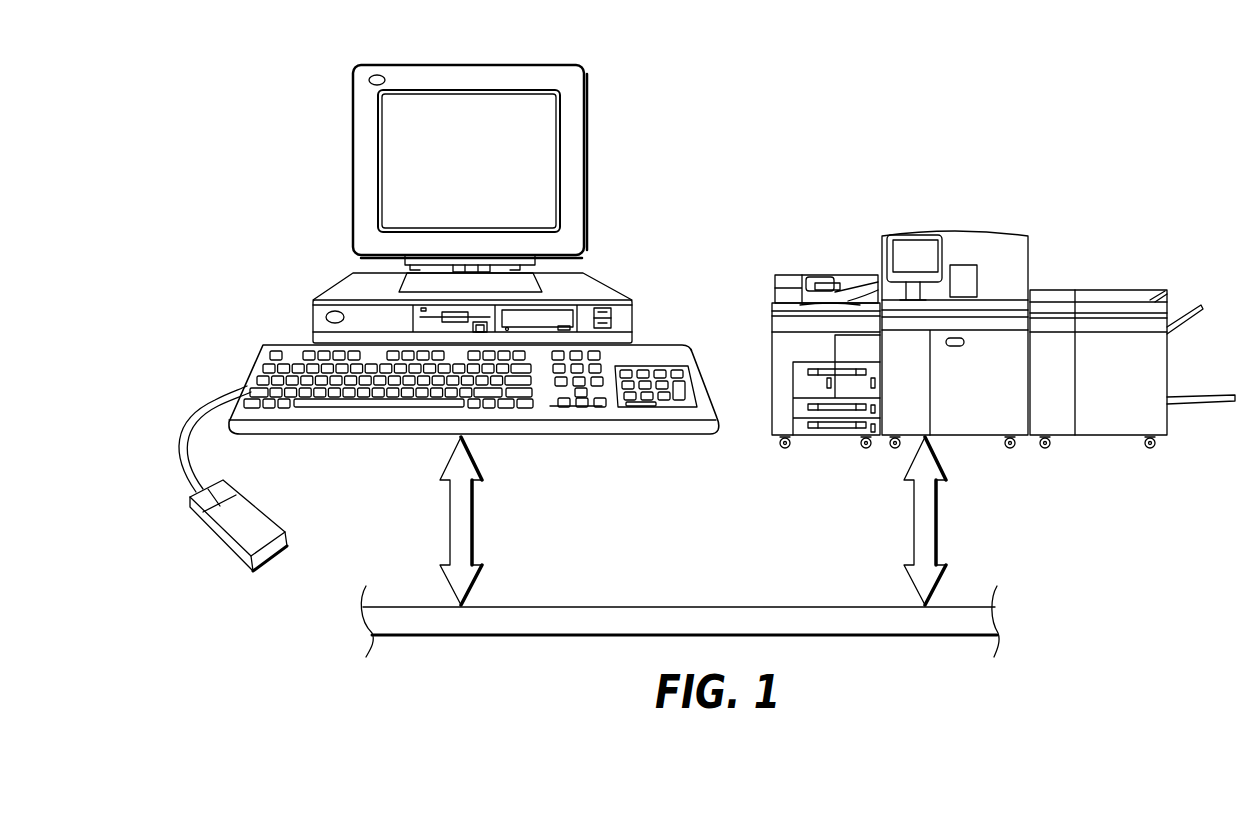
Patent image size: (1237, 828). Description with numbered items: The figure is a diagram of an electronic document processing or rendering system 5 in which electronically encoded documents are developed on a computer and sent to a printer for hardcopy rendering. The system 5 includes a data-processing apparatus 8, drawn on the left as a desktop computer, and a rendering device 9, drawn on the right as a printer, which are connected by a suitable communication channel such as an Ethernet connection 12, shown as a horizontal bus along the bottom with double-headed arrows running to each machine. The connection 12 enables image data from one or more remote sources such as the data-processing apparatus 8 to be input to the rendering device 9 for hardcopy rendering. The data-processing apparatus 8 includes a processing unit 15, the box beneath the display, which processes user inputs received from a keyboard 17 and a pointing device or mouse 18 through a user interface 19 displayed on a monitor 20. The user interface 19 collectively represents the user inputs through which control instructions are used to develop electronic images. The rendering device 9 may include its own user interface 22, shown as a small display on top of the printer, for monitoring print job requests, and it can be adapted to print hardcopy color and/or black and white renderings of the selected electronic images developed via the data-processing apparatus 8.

The electronic document processing (rendering) system 5 is at (965, 108).
The data-processing apparatus 8 is at (612, 172).
The rendering device 9 is at (1050, 245).
The Ethernet connection 12 is at (688, 608).
The processing unit 15 is at (313, 311).
The keyboard 17 is at (695, 368).
The pointing device or mouse 18 is at (260, 508).
The user interface 19 is at (388, 148).
The monitor 20 is at (510, 65).
The user interface 22 is at (913, 244).